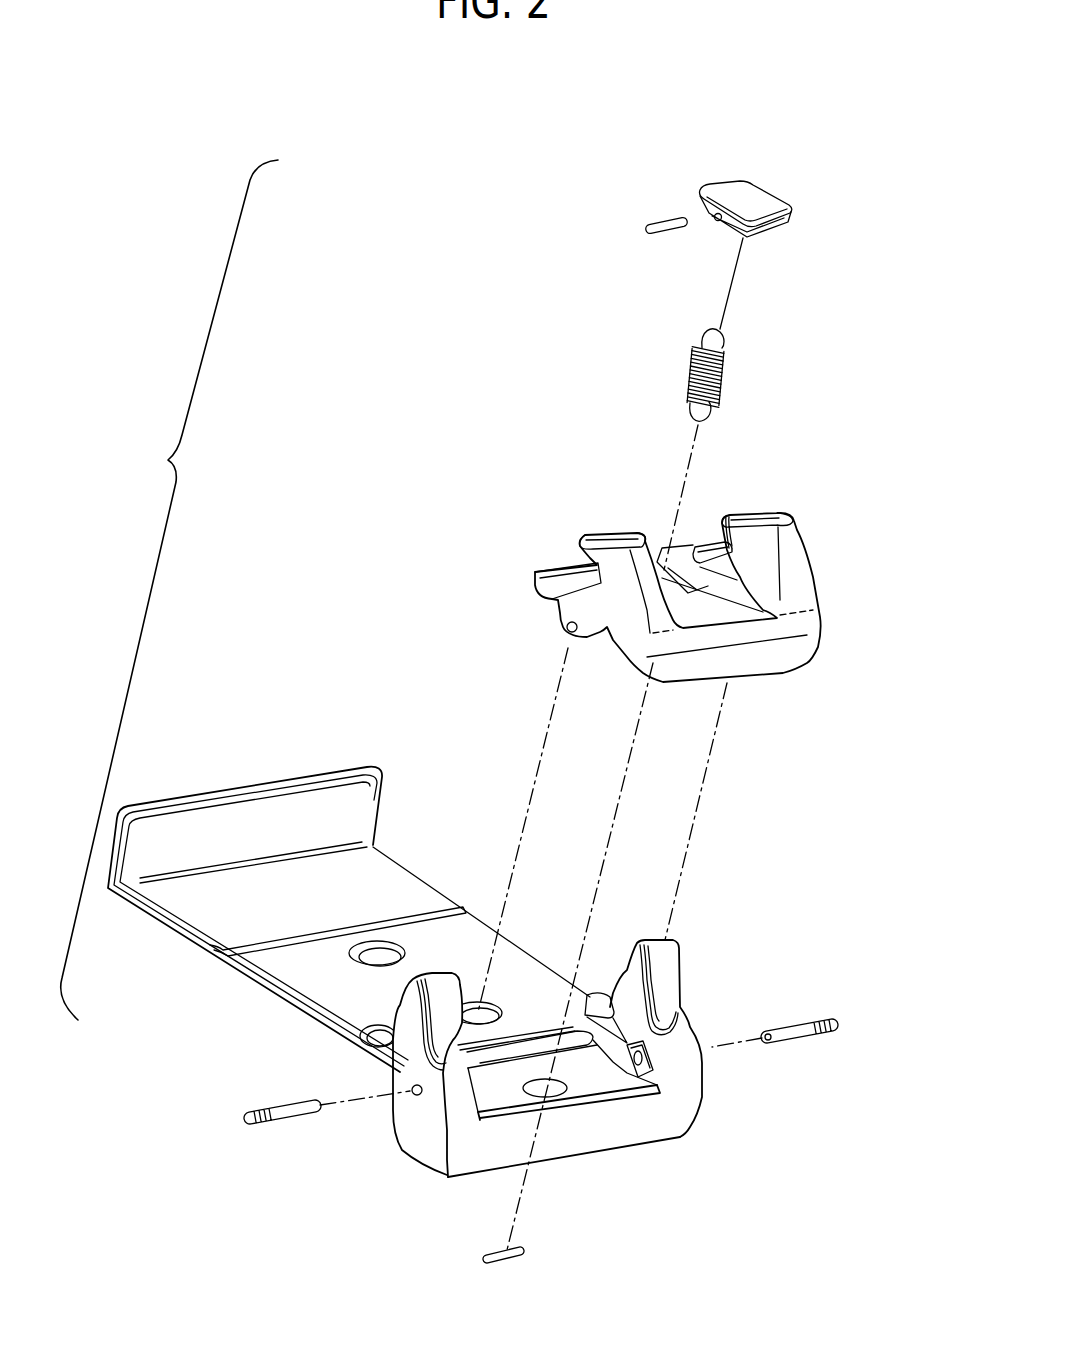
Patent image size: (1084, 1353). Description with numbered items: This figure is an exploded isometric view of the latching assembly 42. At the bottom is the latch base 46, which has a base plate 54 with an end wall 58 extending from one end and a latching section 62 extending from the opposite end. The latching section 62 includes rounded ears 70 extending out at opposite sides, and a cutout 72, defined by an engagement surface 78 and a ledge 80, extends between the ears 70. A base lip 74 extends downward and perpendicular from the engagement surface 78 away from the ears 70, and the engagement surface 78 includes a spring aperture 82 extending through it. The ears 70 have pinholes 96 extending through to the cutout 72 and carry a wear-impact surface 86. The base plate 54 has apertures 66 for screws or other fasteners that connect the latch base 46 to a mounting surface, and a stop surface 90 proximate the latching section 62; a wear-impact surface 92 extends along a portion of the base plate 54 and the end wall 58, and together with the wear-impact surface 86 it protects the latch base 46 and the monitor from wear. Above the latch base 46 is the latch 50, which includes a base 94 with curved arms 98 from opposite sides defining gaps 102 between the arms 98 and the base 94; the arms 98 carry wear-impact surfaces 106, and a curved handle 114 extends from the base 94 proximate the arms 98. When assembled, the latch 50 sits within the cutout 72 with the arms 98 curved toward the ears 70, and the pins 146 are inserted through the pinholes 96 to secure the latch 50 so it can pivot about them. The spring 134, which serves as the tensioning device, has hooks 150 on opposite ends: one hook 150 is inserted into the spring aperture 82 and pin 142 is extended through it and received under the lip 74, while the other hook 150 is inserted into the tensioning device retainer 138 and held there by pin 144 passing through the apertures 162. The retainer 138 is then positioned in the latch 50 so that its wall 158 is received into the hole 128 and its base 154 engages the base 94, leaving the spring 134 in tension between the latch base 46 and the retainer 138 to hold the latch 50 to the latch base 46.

The latching assembly 42 is at (169, 590).
The latch base 46 is at (250, 1002).
The latch 50 is at (696, 580).
The base plate 54 is at (349, 891).
The end wall 58 is at (237, 779).
The latching section 62 is at (524, 1057).
The apertures 66 is at (471, 1014).
The rounded ears 70 is at (405, 1009).
The cutout 72 is at (499, 1122).
The base lip 74 is at (613, 1130).
The engagement surface 78 is at (637, 1083).
The ledge 80 is at (617, 1015).
The spring aperture 82 is at (553, 1121).
The wear-impact surface 86 is at (663, 948).
The stop surface 90 is at (527, 1040).
The wear-impact surface 92 is at (357, 823).
The base 94 is at (695, 570).
The pinholes 96 is at (412, 1090).
The curved arms 98 is at (767, 583).
The gaps 102 is at (563, 551).
The wear-impact surfaces 106 is at (622, 537).
The curved handle 114 is at (760, 640).
The hole 128 is at (679, 560).
The spring 134 is at (726, 375).
The tensioning device retainer 138 is at (782, 215).
The pin 142 is at (500, 1258).
The pin 144 is at (660, 232).
The pins 146 is at (286, 1123).
The hooks 150 is at (693, 418).
The base 154 is at (768, 211).
The wall 158 is at (768, 232).
The apertures 162 is at (718, 223).